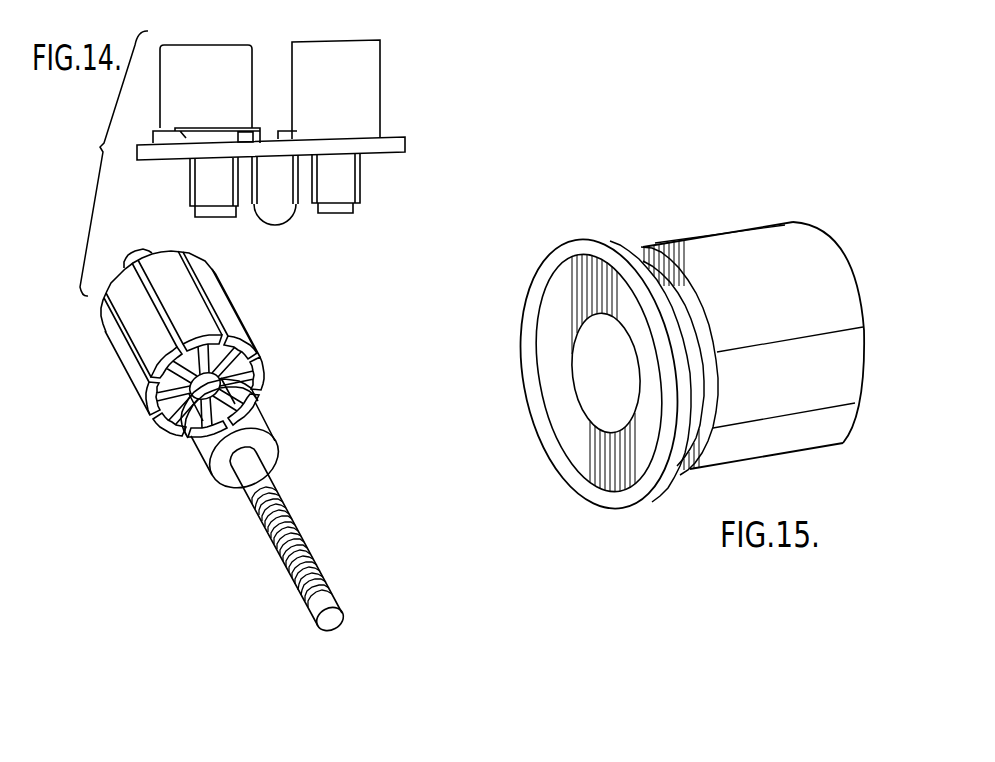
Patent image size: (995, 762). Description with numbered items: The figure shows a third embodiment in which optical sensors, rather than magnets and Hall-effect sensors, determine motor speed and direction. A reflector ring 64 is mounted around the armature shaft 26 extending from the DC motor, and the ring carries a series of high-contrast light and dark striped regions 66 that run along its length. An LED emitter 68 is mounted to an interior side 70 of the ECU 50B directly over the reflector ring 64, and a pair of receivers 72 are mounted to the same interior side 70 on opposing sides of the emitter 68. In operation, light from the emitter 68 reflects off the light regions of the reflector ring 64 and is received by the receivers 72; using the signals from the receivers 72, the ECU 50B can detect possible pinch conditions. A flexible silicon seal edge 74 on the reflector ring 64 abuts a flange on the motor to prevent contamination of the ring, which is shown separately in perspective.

In FIG. 14, the ECU 50B is at (405, 138).
In FIG. 14, the receivers 72 is at (195, 188).
In FIG. 14, the LED emitter 68 is at (290, 212).
In FIG. 14, the interior side 70 is at (392, 161).
In FIG. 14, the striped regions 66 is at (258, 413).
In FIG. 15, the striped regions 66 is at (743, 227).
In FIG. 14, the reflector ring 64 is at (273, 434).
In FIG. 15, the reflector ring 64 is at (793, 206).
In FIG. 14, the armature shaft 26 is at (350, 623).
In FIG. 15, the flexible silicon seal edge 74 is at (553, 247).